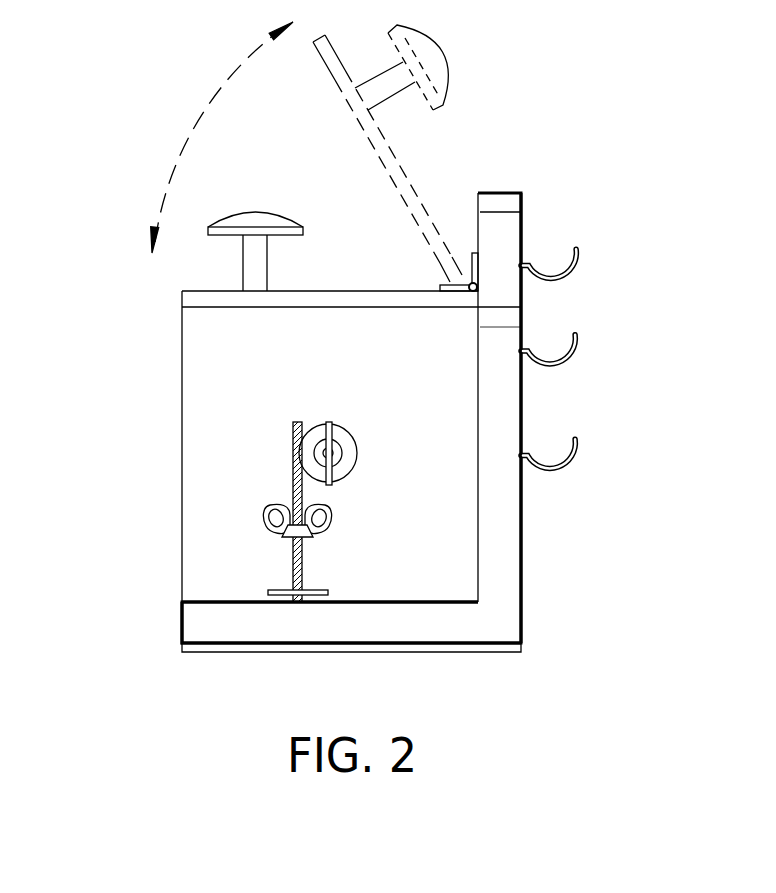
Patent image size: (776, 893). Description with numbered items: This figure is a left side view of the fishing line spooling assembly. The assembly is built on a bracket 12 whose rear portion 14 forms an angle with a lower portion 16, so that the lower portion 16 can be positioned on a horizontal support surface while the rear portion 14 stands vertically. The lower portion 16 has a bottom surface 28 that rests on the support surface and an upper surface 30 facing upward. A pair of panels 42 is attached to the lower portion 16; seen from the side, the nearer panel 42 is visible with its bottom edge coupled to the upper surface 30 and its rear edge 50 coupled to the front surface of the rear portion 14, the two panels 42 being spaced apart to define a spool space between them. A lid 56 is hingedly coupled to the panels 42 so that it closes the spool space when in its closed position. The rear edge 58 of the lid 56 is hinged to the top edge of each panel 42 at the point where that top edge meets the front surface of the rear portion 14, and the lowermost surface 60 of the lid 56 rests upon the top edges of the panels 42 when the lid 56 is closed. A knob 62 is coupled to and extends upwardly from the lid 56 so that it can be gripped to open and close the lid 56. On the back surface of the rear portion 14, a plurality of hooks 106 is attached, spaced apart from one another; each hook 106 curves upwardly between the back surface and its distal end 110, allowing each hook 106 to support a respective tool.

The bracket 12 is at (540, 172).
The rear portion 14 is at (521, 590).
The lower portion 16 is at (182, 618).
The bottom surface 28 is at (462, 652).
The upper surface 30 is at (213, 602).
The panels 42 is at (190, 342).
The rear edge 50 is at (480, 523).
The lid 56 is at (196, 291).
The rear edge 58 is at (475, 285).
The lowermost surface 60 is at (394, 303).
The knob 62 is at (267, 214).
The hooks 106 is at (580, 453).
The distal end 110 is at (575, 248).